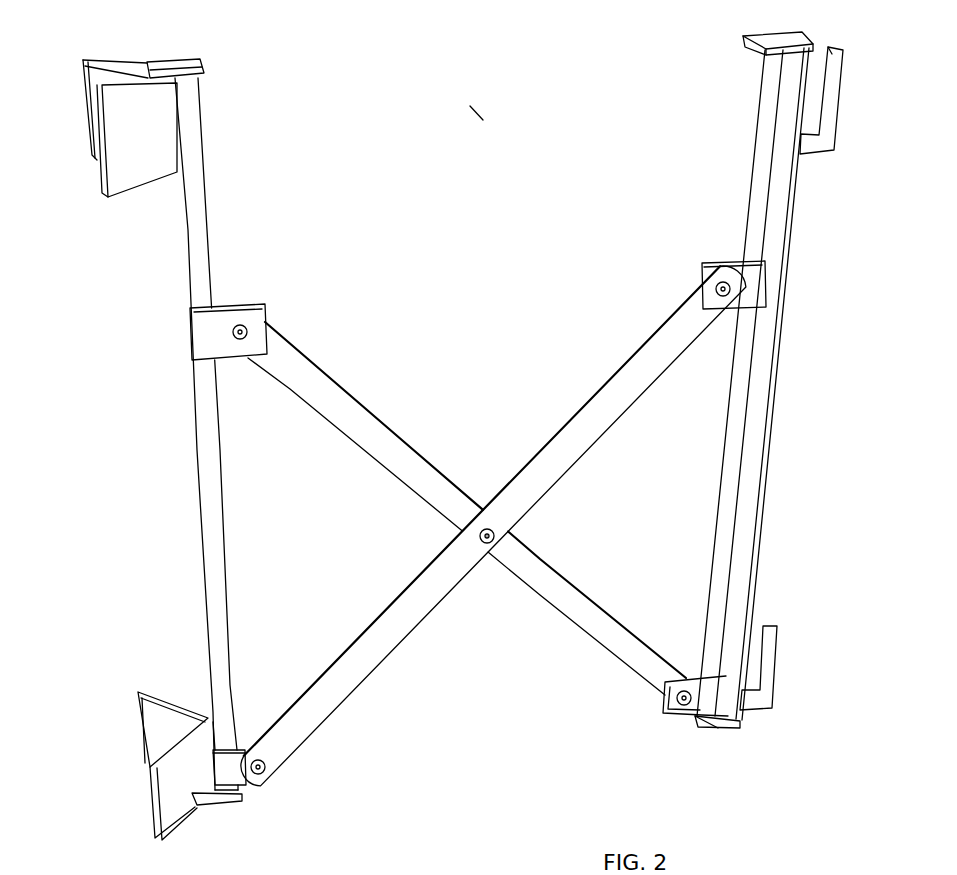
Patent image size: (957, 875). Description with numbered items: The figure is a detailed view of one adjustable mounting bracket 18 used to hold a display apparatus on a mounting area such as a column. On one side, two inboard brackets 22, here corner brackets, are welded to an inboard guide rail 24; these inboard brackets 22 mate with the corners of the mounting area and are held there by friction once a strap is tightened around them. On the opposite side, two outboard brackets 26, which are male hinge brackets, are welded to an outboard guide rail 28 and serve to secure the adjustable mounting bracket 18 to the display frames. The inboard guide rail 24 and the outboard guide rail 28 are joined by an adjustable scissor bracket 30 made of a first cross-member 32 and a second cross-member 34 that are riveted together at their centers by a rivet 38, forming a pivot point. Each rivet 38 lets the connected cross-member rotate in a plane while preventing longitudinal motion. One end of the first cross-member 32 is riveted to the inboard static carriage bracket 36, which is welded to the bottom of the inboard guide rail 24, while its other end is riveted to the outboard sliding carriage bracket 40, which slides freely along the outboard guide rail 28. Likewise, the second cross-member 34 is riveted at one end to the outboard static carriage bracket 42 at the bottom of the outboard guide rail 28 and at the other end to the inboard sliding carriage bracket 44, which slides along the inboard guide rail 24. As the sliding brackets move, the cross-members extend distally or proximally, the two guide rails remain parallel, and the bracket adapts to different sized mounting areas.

The adjustable mounting bracket 18 is at (483, 120).
The inboard bracket 22 is at (94, 127).
The inboard guide rail 24 is at (207, 564).
The outboard bracket 26 is at (836, 120).
The outboard guide rail 28 is at (765, 120).
The adjustable scissor bracket 30 is at (473, 413).
The first cross-member 32 is at (393, 612).
The second cross-member 34 is at (347, 402).
The inboard static carriage bracket 36 is at (283, 782).
The rivet 38 is at (250, 331).
The outboard sliding carriage bracket 40 is at (743, 263).
The outboard static carriage bracket 42 is at (663, 713).
The inboard sliding carriage bracket 44 is at (236, 308).